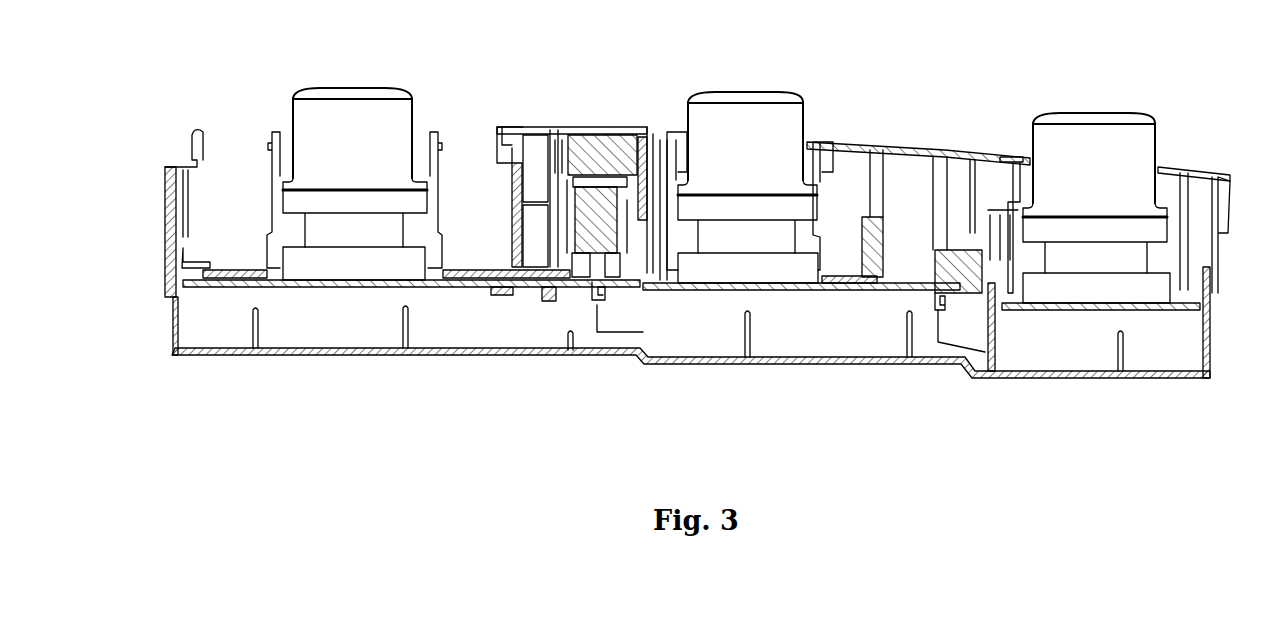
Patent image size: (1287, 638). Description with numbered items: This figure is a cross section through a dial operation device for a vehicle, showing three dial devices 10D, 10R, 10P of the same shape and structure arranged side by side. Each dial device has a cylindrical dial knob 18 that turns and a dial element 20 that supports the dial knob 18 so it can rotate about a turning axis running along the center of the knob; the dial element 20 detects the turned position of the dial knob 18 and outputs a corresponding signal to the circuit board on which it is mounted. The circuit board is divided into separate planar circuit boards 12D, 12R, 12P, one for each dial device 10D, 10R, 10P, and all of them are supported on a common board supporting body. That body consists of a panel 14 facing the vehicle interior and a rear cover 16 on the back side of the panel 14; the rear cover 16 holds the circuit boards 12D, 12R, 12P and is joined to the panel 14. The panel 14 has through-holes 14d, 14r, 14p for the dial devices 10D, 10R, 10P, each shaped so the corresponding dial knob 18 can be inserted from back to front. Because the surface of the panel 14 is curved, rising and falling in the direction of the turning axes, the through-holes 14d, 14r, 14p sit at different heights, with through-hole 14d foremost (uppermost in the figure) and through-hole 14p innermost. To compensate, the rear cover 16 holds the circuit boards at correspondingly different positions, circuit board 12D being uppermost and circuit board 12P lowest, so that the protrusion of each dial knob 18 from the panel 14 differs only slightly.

The dial device 10D is at (465, 42).
The dial device 10R is at (853, 45).
The dial device 10P is at (1246, 122).
The circuit board 12D is at (460, 288).
The circuit board 12R is at (718, 291).
The circuit board 12P is at (1045, 311).
The panel 14 is at (931, 142).
The through-hole 14d is at (292, 140).
The through-hole 14r is at (688, 140).
The through-hole 14p is at (1030, 148).
The rear cover 16 is at (798, 364).
The dial knob 18 is at (412, 115).
The dial element 20 is at (403, 230).